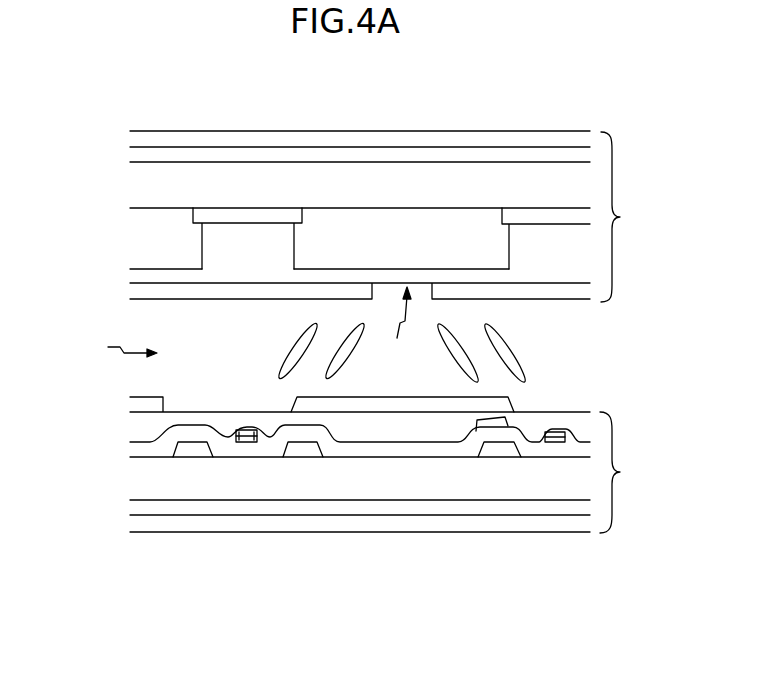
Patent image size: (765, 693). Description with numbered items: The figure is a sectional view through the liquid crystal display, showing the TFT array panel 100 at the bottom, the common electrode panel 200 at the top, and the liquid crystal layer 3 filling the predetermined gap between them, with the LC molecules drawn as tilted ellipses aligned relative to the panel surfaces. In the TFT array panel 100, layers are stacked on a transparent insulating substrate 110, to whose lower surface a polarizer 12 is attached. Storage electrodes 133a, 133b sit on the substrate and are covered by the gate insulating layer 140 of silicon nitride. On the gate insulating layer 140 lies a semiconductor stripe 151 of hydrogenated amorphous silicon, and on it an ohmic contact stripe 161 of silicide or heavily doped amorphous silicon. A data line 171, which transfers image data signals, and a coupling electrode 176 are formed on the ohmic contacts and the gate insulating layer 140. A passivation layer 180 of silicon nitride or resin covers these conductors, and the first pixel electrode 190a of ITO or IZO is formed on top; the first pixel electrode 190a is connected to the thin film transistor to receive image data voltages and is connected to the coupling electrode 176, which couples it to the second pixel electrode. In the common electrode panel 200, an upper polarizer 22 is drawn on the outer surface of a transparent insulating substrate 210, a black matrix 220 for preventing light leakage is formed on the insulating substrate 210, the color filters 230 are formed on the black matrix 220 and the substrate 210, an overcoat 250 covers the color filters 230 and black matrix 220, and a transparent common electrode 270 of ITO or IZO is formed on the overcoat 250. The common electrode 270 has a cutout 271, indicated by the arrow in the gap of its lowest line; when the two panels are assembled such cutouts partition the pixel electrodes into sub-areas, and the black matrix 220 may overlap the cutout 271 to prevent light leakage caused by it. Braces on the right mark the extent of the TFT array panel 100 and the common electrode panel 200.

The liquid crystal layer 3 is at (125, 351).
The polarizer 12 is at (458, 527).
The upper polarizer 22 is at (429, 140).
The TFT array panel 100 is at (630, 472).
The insulating substrate 110 is at (417, 478).
The storage electrode 133a is at (192, 448).
The storage electrode 133b is at (302, 448).
The gate insulating layer 140 is at (567, 450).
The semiconductor stripe 151 is at (240, 442).
The ohmic contact stripe 161 is at (248, 442).
The data line 171 is at (230, 427).
The coupling electrode 176 is at (512, 423).
The passivation layer 180 is at (353, 430).
The first pixel electrode 190a is at (385, 405).
The common electrode panel 200 is at (630, 217).
The insulating substrate 210 is at (202, 178).
The black matrix 220 is at (268, 217).
The color filter 230 is at (371, 230).
The overcoat 250 is at (553, 250).
The common electrode 270 is at (487, 293).
The cutout 271 is at (398, 324).